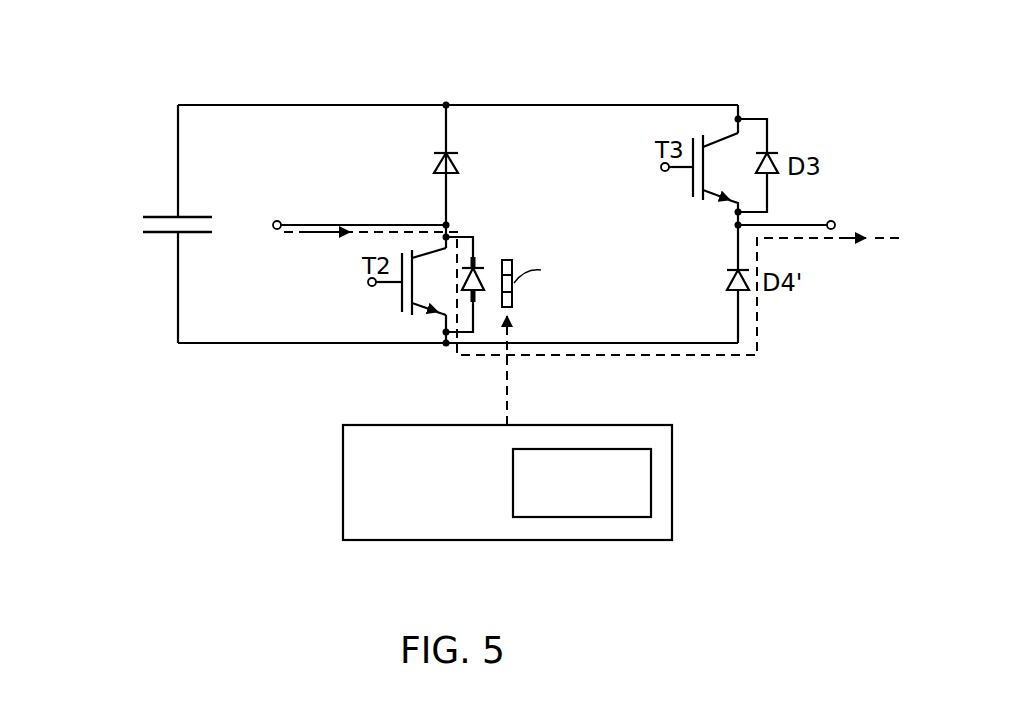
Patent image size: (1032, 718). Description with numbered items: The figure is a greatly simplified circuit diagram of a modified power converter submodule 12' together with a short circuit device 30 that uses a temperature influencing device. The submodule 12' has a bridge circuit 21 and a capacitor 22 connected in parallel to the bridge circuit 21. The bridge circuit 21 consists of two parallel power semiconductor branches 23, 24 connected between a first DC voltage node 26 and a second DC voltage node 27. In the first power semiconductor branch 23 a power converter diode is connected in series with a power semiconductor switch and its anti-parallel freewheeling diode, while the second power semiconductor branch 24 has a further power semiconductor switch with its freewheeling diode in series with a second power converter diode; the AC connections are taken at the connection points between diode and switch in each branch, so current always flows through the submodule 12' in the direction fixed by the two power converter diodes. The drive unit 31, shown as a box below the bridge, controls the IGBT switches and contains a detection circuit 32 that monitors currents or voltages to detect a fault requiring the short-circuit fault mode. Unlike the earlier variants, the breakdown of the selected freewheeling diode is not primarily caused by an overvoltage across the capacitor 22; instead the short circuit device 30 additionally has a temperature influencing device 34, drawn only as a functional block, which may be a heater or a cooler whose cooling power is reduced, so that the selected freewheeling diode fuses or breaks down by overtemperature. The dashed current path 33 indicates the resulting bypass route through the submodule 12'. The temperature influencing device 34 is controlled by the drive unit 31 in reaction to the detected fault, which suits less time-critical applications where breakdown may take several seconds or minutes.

The submodule 12' is at (389, 204).
The bridge circuit 21 is at (421, 149).
The capacitor 22 is at (108, 204).
The first power semiconductor branch 23 is at (456, 128).
The second power semiconductor branch 24 is at (748, 110).
The first DC voltage node 26 is at (573, 105).
The second DC voltage node 27 is at (683, 357).
The short circuit device 30 is at (493, 252).
The drive unit 31 is at (438, 425).
The detection circuit 32 is at (651, 482).
The current path (dashed) 33 is at (588, 357).
The temperature influencing device 34 is at (514, 288).